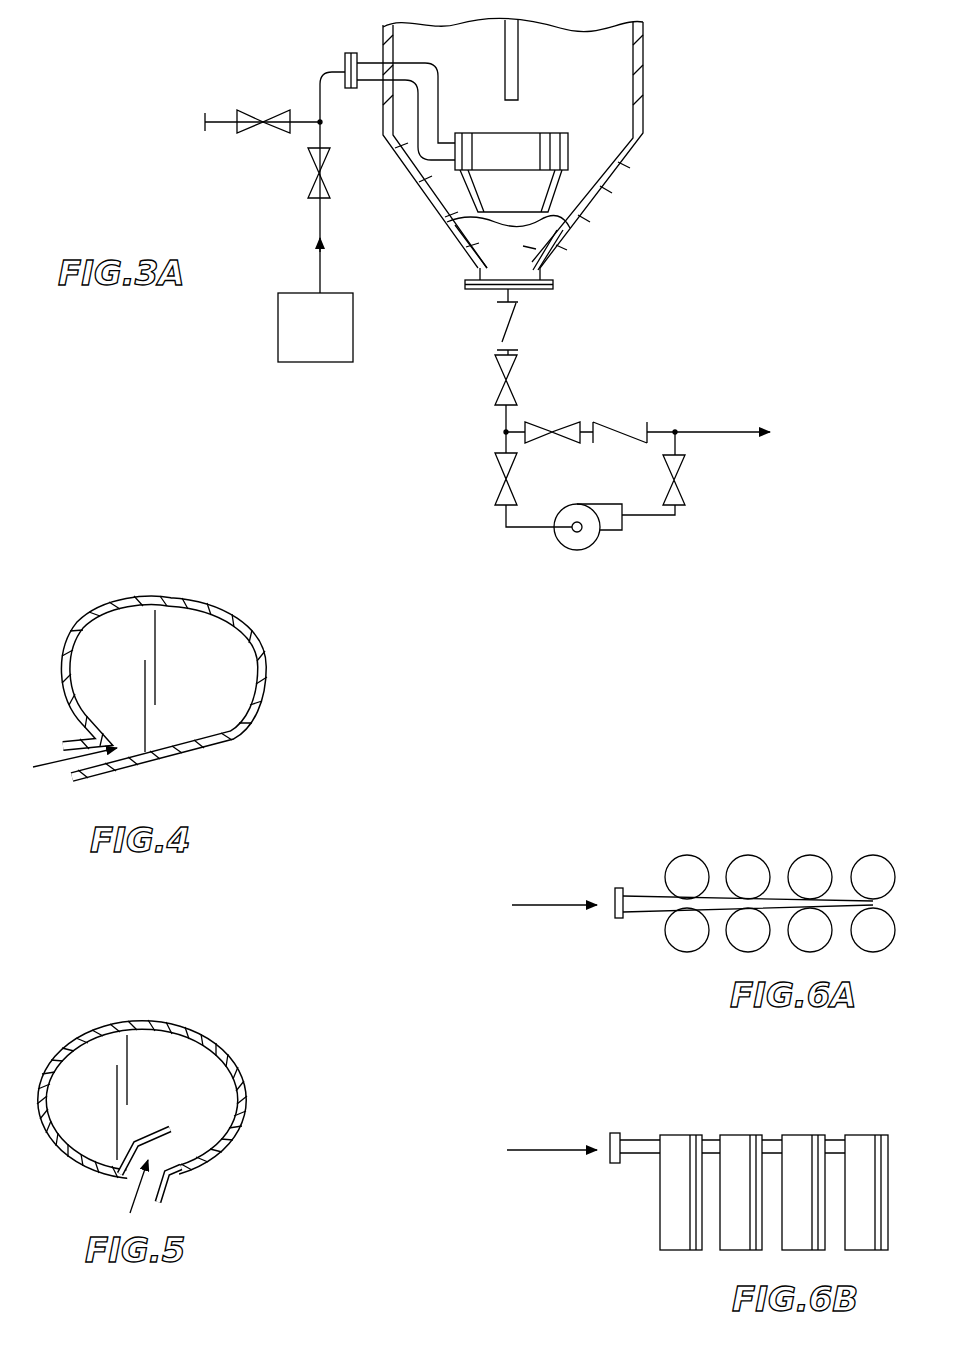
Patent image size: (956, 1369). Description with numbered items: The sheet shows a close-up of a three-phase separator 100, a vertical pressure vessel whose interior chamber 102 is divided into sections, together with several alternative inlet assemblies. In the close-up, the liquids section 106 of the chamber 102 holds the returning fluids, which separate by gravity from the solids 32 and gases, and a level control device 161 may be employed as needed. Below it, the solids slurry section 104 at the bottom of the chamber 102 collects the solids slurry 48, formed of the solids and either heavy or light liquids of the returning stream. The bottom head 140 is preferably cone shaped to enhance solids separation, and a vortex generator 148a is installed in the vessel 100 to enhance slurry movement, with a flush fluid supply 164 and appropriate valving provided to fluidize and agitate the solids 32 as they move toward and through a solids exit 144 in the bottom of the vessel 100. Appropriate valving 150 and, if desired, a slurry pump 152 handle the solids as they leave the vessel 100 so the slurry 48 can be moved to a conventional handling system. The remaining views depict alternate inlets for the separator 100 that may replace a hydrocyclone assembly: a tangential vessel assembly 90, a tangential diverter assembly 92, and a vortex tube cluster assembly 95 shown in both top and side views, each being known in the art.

In FIG. 3A, the three-phase separator 100 is at (323, 27).
In FIG. 4, the three-phase separator 100 is at (195, 598).
In FIG. 5, the three-phase separator 100 is at (193, 1030).
In FIG. 3A, the interior chamber 102 is at (492, 66).
In FIG. 3A, the liquids section 106 is at (603, 102).
In FIG. 3A, the solids slurry section 104 is at (445, 180).
In FIG. 3A, the vortex generator 148a is at (620, 157).
In FIG. 3A, the bottom head 140 is at (620, 165).
In FIG. 3A, the solids slurry 48 is at (572, 188).
In FIG. 3A, the solids 32 is at (560, 253).
In FIG. 3A, the solids exit 144 is at (480, 290).
In FIG. 3A, the valving 150 is at (603, 387).
In FIG. 3A, the slurry pump 152 is at (590, 537).
In FIG. 3A, the level control device 161 is at (262, 150).
In FIG. 3A, the flush fluid supply 164 is at (342, 347).
In FIG. 4, the tangential vessel assembly 90 is at (210, 768).
In FIG. 5, the tangential diverter assembly 92 is at (263, 1113).
In FIG. 6A, the vortex tube cluster assembly 95 is at (635, 853).
In FIG. 6B, the vortex tube cluster assembly 95 is at (642, 1215).